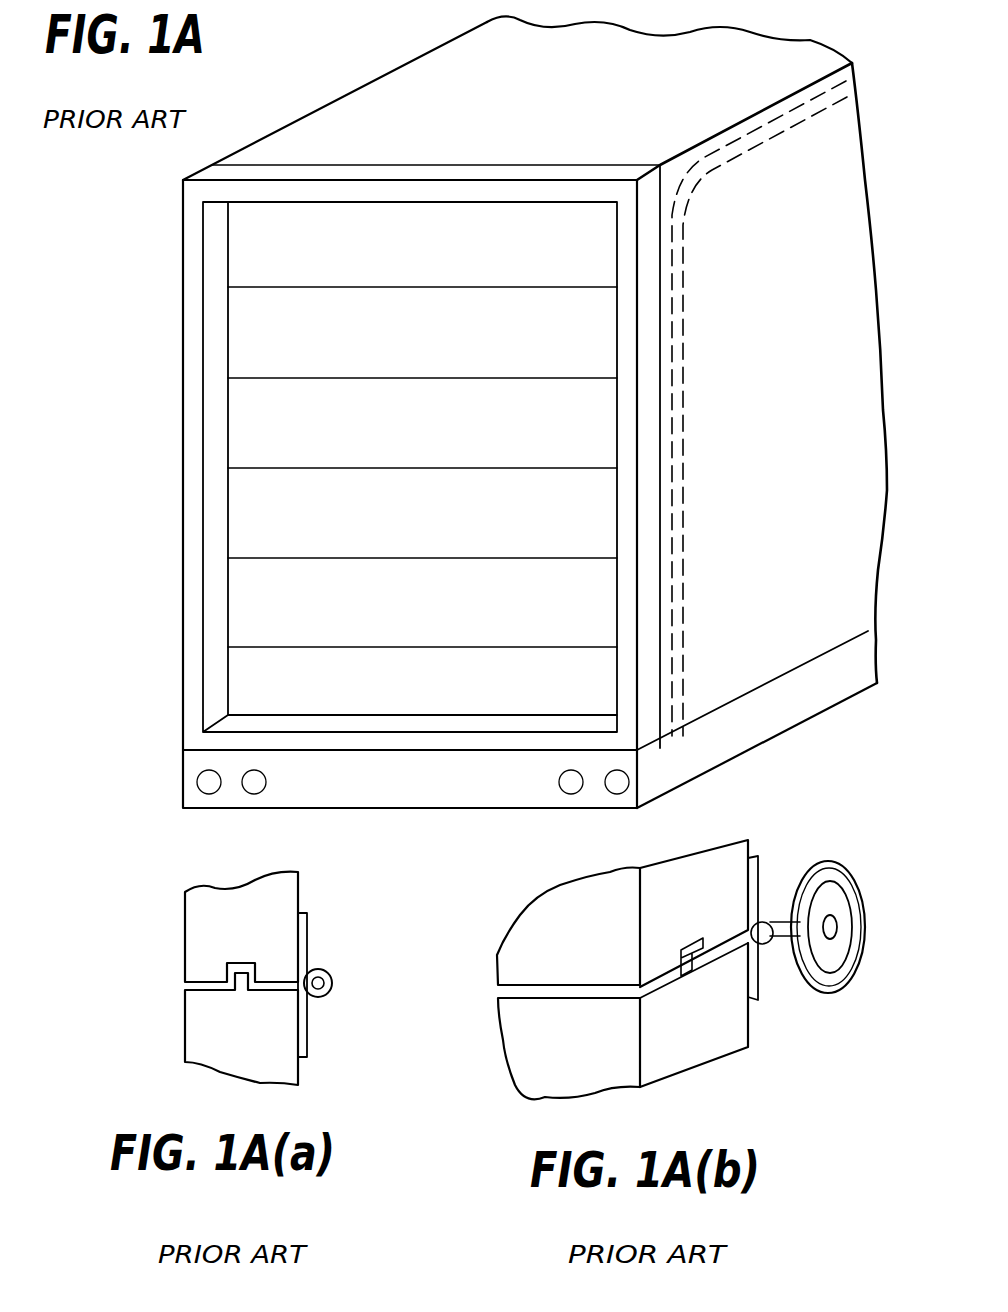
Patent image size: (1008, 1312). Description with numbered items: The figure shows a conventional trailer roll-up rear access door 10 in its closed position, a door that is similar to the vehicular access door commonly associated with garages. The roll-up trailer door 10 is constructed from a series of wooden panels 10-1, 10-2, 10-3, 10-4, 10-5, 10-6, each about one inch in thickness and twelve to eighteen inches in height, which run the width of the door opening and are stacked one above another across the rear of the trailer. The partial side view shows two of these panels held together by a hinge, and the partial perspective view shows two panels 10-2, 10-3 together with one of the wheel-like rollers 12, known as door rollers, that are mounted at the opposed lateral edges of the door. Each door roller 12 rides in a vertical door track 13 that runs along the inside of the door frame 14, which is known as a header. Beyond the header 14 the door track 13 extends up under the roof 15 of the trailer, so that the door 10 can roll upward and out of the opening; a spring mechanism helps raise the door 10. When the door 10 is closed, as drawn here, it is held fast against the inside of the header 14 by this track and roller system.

The trailer roll-up rear access door 10 is at (241, 978).
In FIG. 1A, the wooden panel 10-1 is at (422, 265).
In FIG. 1A, the wooden panel 10-2 is at (422, 352).
The wooden panel 10-2 is at (622, 919).
In FIG. 1A, the wooden panel 10-3 is at (422, 442).
The wooden panel 10-3 is at (623, 1021).
In FIG. 1A, the wooden panel 10-4 is at (422, 531).
In FIG. 1A, the wooden panel 10-5 is at (422, 618).
In FIG. 1A, the wooden panel 10-6 is at (422, 694).
The door roller 12 is at (828, 855).
In FIG. 1A, the door track 13 is at (740, 168).
In FIG. 1A, the door frame 14 is at (183, 560).
In FIG. 1A, the roof 15 is at (533, 108).